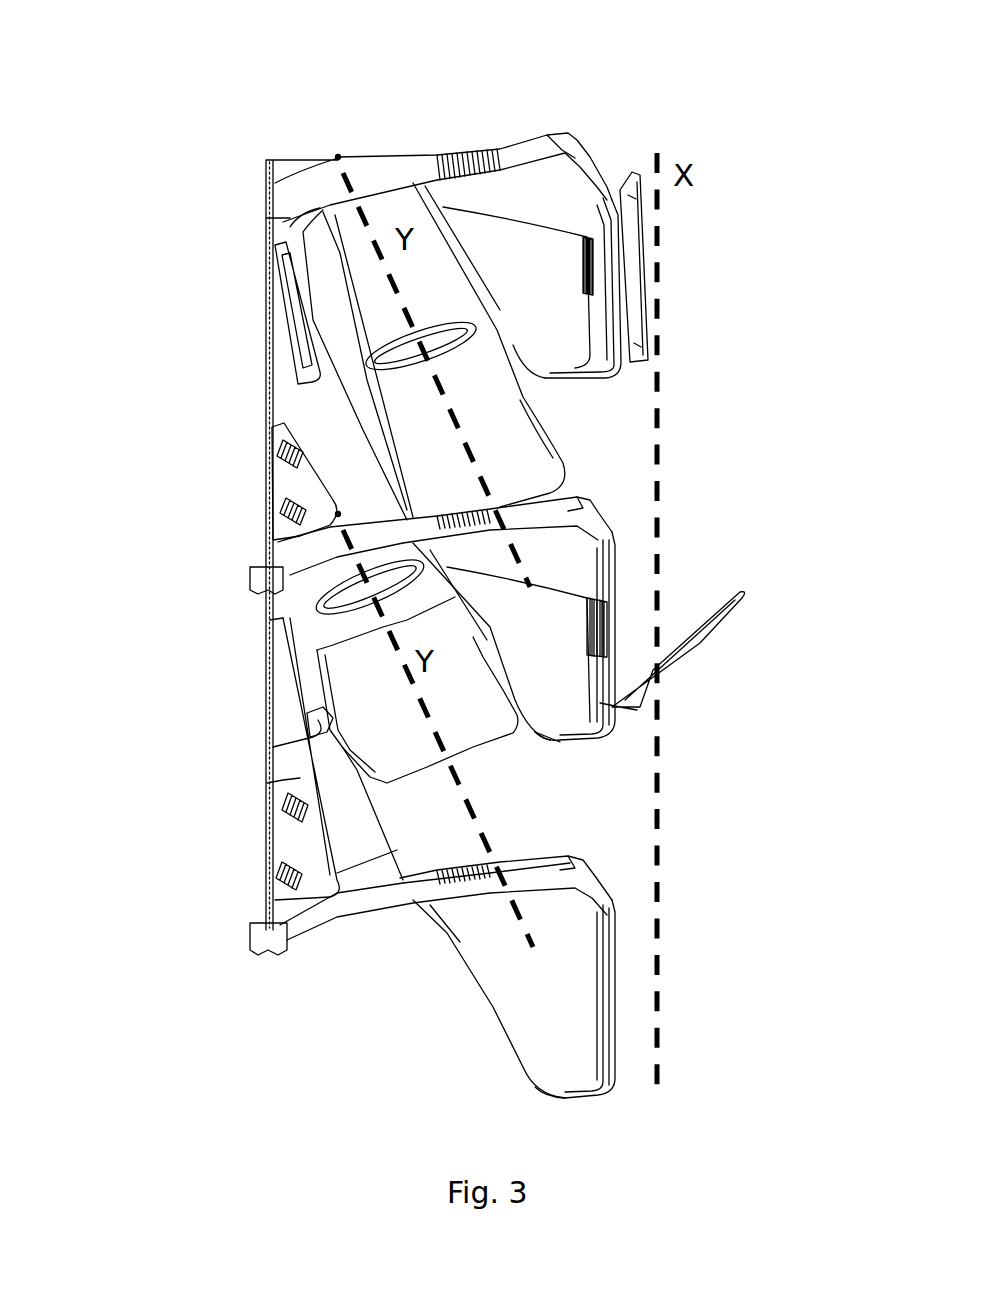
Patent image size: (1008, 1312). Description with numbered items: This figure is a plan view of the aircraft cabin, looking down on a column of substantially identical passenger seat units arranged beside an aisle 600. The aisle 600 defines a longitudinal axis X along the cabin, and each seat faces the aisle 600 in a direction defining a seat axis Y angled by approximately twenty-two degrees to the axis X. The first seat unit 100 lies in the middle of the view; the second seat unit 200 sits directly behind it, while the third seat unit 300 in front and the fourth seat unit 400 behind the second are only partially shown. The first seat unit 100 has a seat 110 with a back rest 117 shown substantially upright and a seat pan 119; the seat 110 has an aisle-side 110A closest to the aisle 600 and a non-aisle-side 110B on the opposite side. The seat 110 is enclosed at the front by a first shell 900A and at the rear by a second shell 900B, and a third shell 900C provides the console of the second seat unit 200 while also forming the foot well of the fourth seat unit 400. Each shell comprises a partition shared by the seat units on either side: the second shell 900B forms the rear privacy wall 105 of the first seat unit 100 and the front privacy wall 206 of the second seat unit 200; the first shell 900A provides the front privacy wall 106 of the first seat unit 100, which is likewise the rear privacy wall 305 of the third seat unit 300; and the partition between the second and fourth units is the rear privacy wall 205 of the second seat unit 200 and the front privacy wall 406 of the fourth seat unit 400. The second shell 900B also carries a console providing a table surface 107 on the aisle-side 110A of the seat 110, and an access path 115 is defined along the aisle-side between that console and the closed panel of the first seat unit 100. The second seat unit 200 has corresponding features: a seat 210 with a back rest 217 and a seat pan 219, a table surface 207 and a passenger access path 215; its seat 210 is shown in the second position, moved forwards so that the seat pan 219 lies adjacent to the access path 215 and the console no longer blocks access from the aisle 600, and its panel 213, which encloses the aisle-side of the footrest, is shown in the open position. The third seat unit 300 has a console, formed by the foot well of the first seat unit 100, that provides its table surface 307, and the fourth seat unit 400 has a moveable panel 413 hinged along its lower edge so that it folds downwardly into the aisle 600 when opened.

The fourth seat unit 400 is at (372, 107).
The third shell 900C is at (625, 140).
The second shell 900B is at (613, 525).
The first shell 900A is at (622, 878).
The second seat unit 200 is at (240, 325).
The first aircraft passenger seat unit 100 is at (222, 638).
The third seat unit 300 is at (260, 1007).
The rear privacy wall of second seat unit 205 is at (318, 205).
The front privacy wall of fourth seat unit 406 is at (357, 180).
The rear privacy wall 105 is at (322, 562).
The front privacy wall of second seat unit 206 is at (357, 545).
The rear privacy wall of third seat unit 305 is at (355, 910).
The front privacy wall 106 is at (341, 874).
The moveable panel 413 is at (633, 258).
The table surface of second seat unit 207 is at (567, 312).
The back rest of second seat unit 217 is at (375, 385).
The passenger access path 215 is at (585, 397).
The seat pan 219 is at (525, 421).
The seat 210 is at (358, 445).
The aisle 600 is at (677, 563).
The aisle-side 110A is at (483, 653).
The panel 213 is at (713, 630).
The back rest 117 is at (328, 633).
The non-aisle-side 110B is at (328, 690).
The seat 110 is at (330, 725).
The seat pan 119 is at (377, 757).
The table surface 107 is at (572, 702).
The access path 115 is at (562, 785).
The table surface of third seat unit 307 is at (577, 1020).